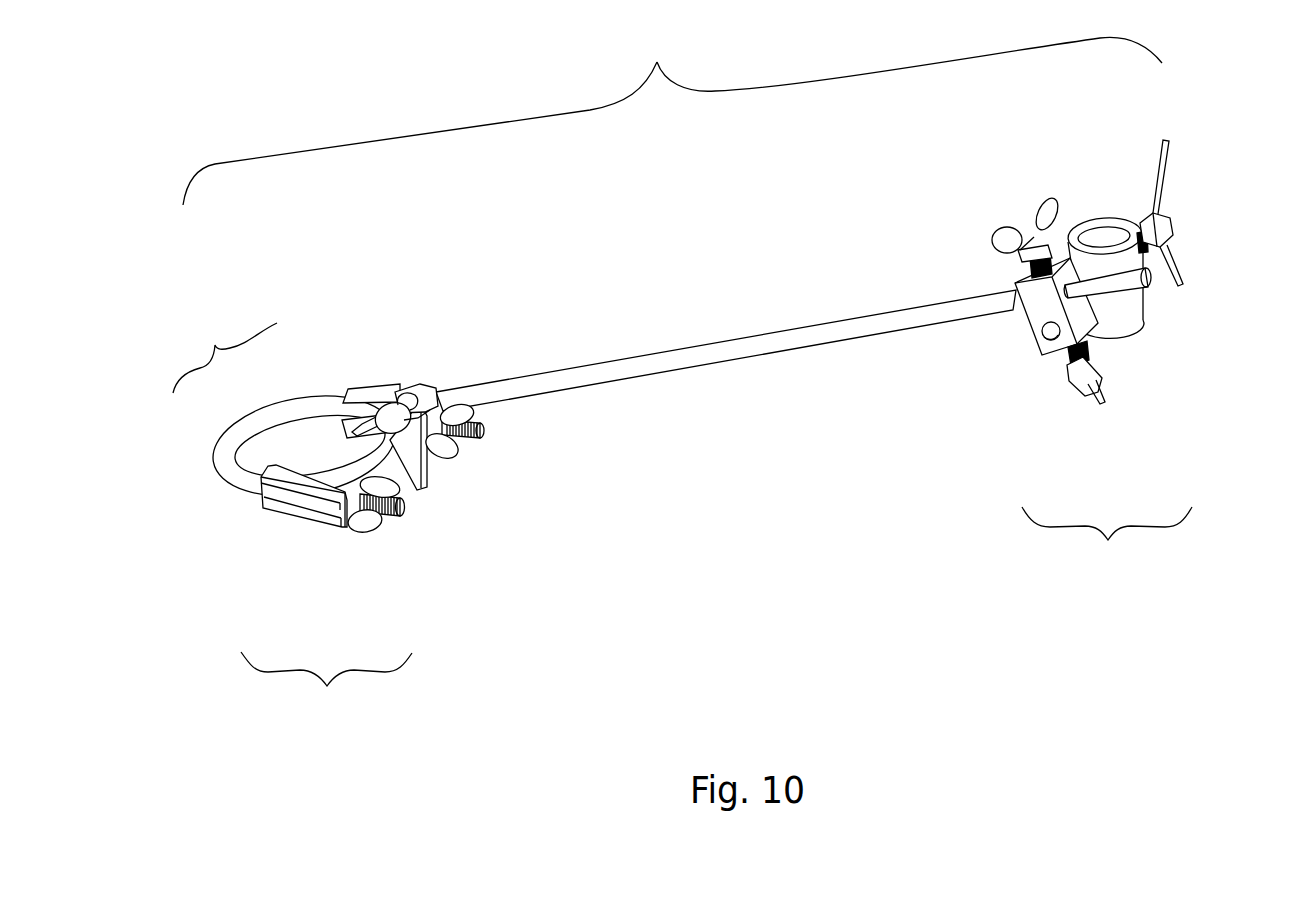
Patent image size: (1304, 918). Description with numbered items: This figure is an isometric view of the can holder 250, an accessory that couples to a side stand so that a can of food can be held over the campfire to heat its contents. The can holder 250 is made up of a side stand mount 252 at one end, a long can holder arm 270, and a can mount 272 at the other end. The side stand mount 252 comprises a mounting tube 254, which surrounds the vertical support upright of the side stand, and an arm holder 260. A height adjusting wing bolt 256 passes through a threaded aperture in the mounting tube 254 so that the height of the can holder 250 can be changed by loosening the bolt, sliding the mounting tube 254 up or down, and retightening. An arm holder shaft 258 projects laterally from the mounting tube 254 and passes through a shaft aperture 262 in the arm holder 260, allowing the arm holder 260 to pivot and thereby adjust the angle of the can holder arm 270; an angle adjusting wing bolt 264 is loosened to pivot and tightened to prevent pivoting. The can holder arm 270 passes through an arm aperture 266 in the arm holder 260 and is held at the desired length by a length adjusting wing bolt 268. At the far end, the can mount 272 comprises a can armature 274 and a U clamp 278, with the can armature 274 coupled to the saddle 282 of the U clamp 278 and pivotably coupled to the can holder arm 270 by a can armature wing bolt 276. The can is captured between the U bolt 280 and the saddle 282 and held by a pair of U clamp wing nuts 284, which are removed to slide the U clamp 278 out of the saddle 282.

The can holder 250 is at (672, 117).
The side stand mount 252 is at (1107, 541).
The mounting tube 254 is at (1093, 218).
The height adjusting wing bolt 256 is at (1174, 218).
The arm holder shaft 258 is at (1042, 343).
The arm holder 260 is at (1082, 320).
The shaft aperture 262 is at (1060, 338).
The angle adjusting wing bolt 264 is at (1087, 392).
The arm aperture 266 is at (1060, 300).
The length adjusting wing bolt 268 is at (1018, 226).
The can holder arm 270 is at (683, 352).
The can mount 272 is at (326, 687).
The can armature 274 is at (430, 490).
The can armature wing bolt 276 is at (395, 398).
The U clamp 278 is at (225, 354).
The U bolt 280 is at (222, 462).
The saddle 282 is at (318, 483).
The U clamp wing nuts 284 is at (366, 520).